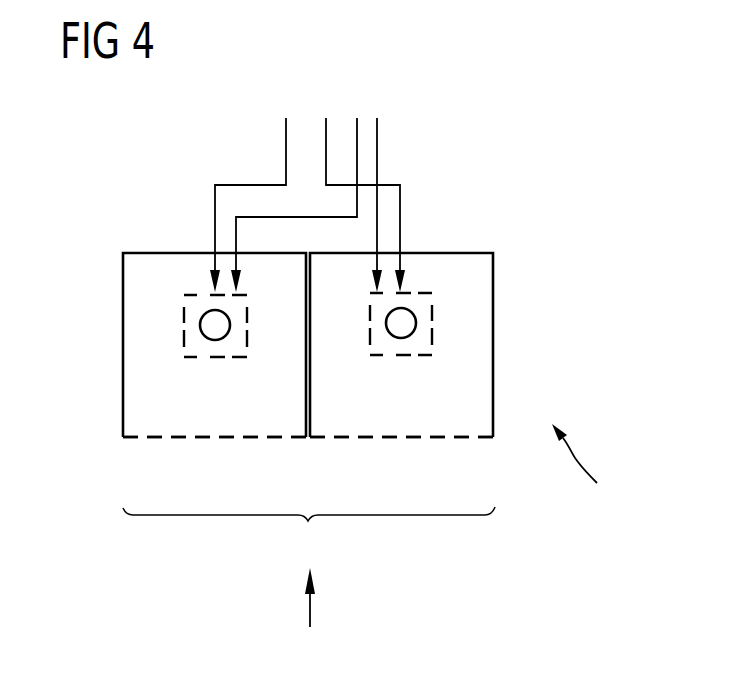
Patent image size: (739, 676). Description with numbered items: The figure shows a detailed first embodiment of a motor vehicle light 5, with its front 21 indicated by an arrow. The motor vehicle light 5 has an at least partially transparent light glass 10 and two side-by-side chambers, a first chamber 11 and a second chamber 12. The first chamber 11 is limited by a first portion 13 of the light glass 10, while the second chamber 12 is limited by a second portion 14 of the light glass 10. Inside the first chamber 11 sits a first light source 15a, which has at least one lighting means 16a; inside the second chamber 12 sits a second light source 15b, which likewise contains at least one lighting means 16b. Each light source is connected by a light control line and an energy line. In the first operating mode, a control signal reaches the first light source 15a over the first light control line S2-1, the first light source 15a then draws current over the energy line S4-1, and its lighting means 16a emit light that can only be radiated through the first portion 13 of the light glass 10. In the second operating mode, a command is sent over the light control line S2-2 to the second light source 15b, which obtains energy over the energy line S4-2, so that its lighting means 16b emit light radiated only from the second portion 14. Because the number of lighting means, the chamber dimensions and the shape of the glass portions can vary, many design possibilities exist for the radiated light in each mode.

The motor vehicle light 5 is at (585, 465).
The light glass 10 is at (309, 533).
The first chamber 11 is at (483, 329).
The second chamber 12 is at (131, 330).
The first portion of the light glass 13 is at (442, 436).
The second portion of the light glass 14 is at (178, 438).
The first light source 15a is at (378, 356).
The second light source 15b is at (238, 357).
The lighting means 16a is at (400, 325).
The second lighting means 16b is at (217, 325).
The front 21 is at (311, 617).
The energy line S4-1 is at (324, 126).
The energy line S4-2 is at (284, 128).
The first light control line S2-1 is at (379, 128).
The light control line S2-2 is at (359, 125).